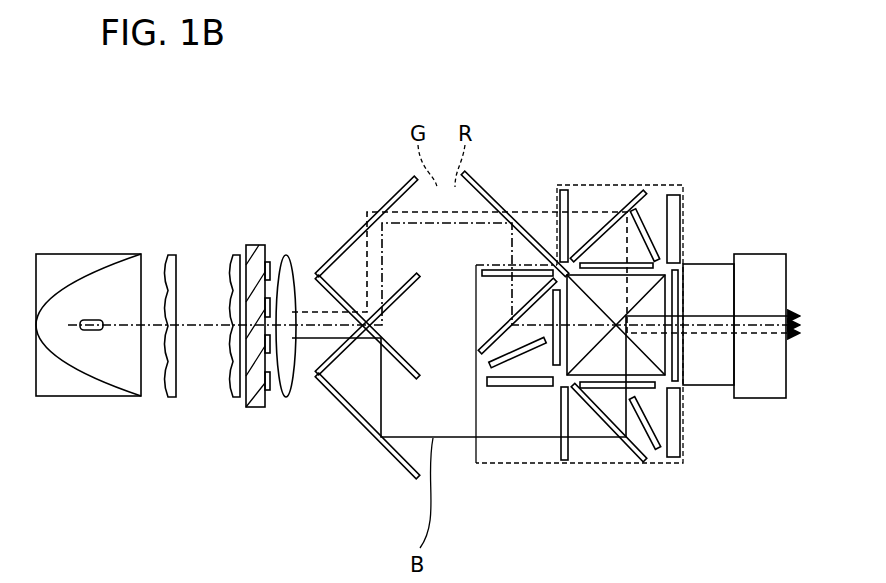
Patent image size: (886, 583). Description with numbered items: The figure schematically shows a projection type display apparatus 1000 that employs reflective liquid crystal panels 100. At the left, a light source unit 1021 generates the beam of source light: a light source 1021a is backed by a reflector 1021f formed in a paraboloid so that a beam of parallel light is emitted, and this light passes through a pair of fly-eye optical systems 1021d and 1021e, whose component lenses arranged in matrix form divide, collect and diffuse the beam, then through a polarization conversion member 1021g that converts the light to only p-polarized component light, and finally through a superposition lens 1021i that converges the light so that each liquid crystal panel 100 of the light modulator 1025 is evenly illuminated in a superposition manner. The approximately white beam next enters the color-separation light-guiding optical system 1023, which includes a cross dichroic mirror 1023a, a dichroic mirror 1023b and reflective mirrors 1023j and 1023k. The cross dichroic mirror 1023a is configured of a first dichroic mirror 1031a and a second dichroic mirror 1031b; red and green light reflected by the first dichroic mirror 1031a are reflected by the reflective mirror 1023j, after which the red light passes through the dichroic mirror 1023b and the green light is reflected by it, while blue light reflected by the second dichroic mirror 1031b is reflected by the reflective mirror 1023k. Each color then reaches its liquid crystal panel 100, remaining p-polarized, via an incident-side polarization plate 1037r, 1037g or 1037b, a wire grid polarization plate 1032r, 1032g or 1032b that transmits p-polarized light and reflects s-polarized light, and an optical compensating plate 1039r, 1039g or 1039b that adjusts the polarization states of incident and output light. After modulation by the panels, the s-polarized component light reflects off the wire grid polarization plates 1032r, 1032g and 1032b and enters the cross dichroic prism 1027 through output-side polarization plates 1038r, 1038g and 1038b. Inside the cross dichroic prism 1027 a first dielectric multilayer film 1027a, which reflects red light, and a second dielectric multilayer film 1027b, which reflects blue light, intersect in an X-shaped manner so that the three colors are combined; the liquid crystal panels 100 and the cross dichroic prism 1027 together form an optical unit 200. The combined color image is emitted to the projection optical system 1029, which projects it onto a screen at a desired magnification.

The projection type display apparatus 1000 is at (375, 116).
The light source unit 1021 is at (143, 160).
The light source 1021a is at (117, 287).
The reflector 1021f is at (85, 377).
The fly-eye optical system 1021d is at (173, 256).
The fly-eye optical system 1021e is at (240, 256).
The polarization conversion member 1021g is at (258, 245).
The superposition lens 1021i is at (285, 257).
The color-separation light-guiding optical system 1023 is at (445, 131).
The cross dichroic mirror 1023a is at (425, 284).
The dichroic mirror 1023b is at (490, 196).
The reflective mirror 1023j is at (398, 188).
The reflective mirror 1023k is at (403, 467).
The first dichroic mirror 1031a is at (400, 298).
The second dichroic mirror 1031b is at (347, 293).
The optical unit 200 is at (555, 185).
The light modulator 1025 is at (736, 195).
The incident-side polarization plate 1037r is at (566, 190).
The incident-side polarization plate 1037g is at (487, 280).
The incident-side polarization plate 1037b is at (566, 462).
The wire grid polarization plate 1032r is at (645, 192).
The wire grid polarization plate 1032g is at (482, 358).
The wire grid polarization plate 1032b is at (642, 440).
The optical compensating plate 1039r is at (636, 210).
The optical compensating plate 1039g is at (490, 368).
The optical compensating plate 1039b is at (658, 450).
The output-side polarization plate 1038r is at (682, 267).
The output-side polarization plate 1038g is at (508, 388).
The output-side polarization plate 1038b is at (682, 388).
The liquid crystal panel 100 is at (680, 203).
The cross dichroic prism 1027 is at (683, 290).
The first dielectric multilayer film 1027a is at (683, 355).
The second dielectric multilayer film 1027b is at (683, 305).
The projection optical system 1029 is at (770, 254).